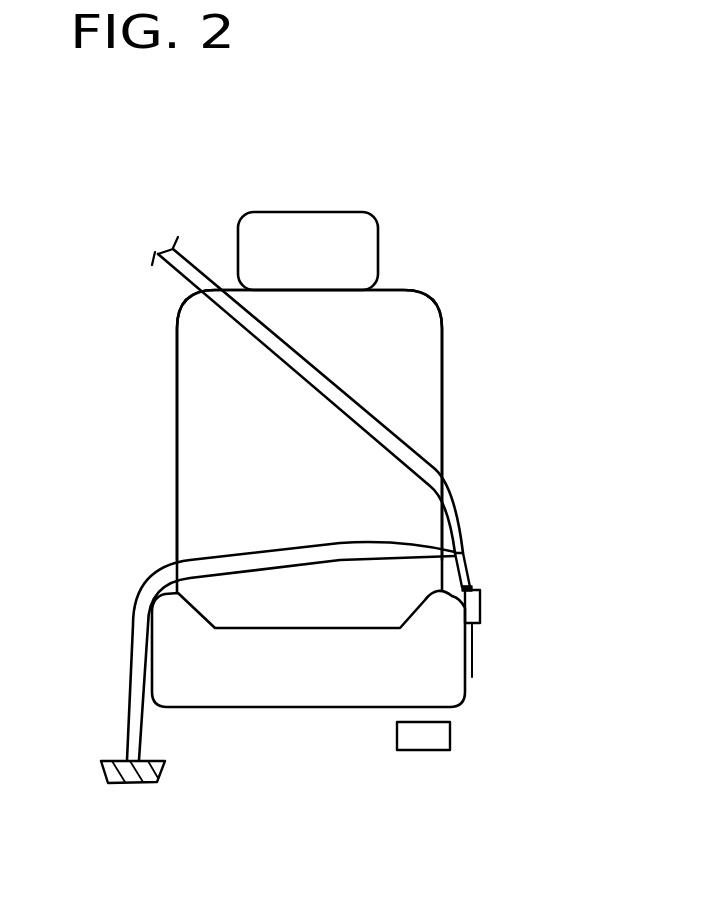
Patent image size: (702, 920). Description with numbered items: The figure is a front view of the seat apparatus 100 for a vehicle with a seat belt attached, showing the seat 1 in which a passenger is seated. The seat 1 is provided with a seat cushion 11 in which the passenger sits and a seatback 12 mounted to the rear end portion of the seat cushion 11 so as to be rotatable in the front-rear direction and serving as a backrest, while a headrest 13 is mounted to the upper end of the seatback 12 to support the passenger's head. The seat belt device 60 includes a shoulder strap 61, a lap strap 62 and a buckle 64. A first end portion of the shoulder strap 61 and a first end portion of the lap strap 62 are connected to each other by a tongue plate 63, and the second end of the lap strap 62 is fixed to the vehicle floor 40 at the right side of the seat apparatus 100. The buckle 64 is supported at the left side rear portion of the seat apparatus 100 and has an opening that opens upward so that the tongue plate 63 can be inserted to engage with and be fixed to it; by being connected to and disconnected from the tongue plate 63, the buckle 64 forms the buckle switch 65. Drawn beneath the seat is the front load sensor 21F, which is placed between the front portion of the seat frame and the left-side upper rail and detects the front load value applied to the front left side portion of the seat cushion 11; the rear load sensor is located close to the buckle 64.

The seat 1 is at (131, 420).
The seat apparatus for a vehicle 100 is at (441, 300).
The seat cushion 11 is at (272, 693).
The seatback 12 is at (422, 373).
The headrest 13 is at (303, 228).
The seat belt device 60 is at (137, 201).
The shoulder strap 61 is at (172, 268).
The lap strap 62 is at (155, 574).
The tongue plate 63 is at (472, 560).
The buckle 64 is at (480, 597).
The buckle switch 65 is at (478, 587).
The vehicle floor 40 is at (115, 758).
The front load sensor 21F is at (440, 736).